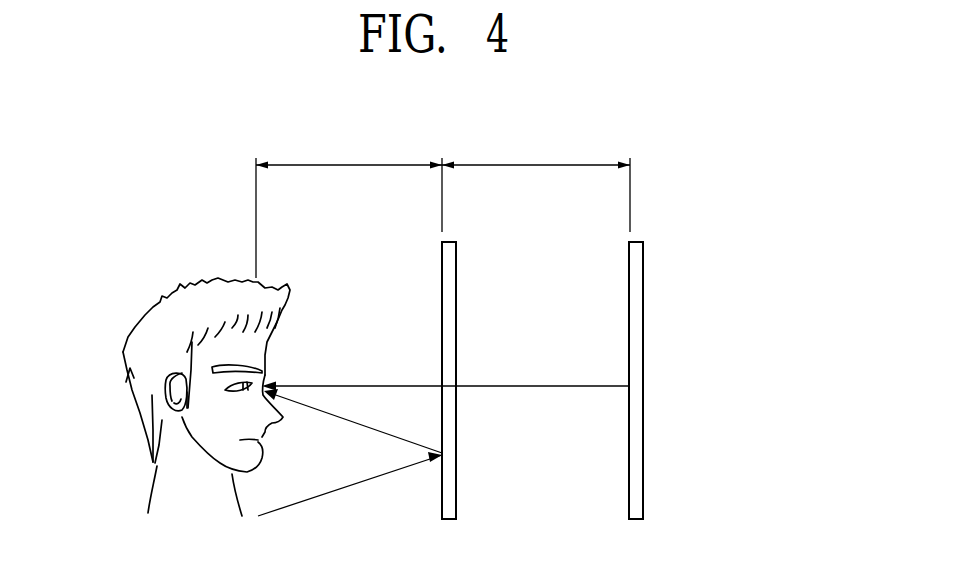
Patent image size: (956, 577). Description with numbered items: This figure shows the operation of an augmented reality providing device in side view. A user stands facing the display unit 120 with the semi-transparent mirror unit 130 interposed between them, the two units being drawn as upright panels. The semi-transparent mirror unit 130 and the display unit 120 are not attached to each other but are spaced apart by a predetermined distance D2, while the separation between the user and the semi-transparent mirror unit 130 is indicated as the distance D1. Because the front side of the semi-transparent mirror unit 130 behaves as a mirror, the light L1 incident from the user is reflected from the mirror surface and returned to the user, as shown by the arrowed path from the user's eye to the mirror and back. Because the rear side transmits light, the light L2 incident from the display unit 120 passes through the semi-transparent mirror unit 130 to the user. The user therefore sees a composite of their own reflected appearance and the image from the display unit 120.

The semi-transparent mirror unit 130 is at (457, 313).
The display unit 120 is at (644, 313).
The distance from viewer to first panel D1 is at (349, 207).
The predetermined distance D2 is at (536, 184).
The light incident from a user L1 is at (350, 452).
The light incident from the display unit L2 is at (445, 375).